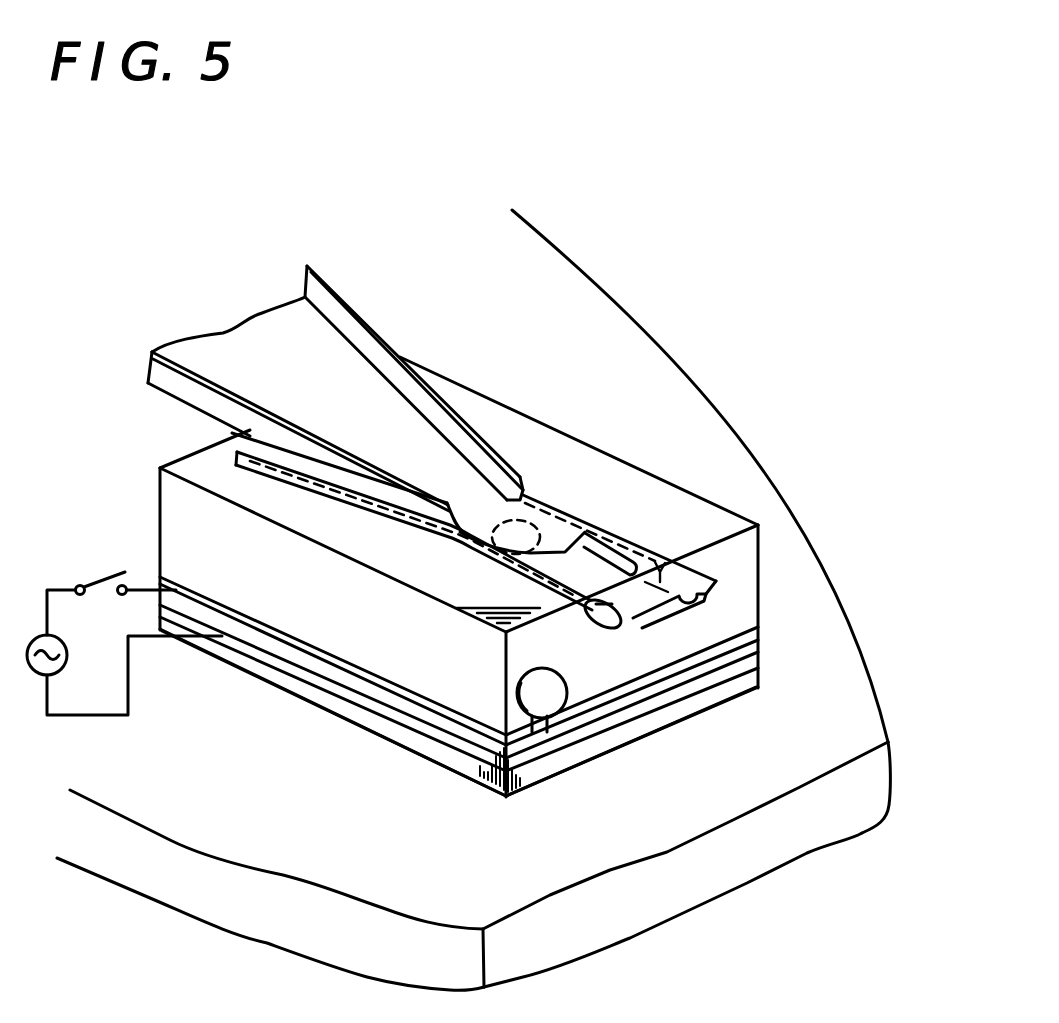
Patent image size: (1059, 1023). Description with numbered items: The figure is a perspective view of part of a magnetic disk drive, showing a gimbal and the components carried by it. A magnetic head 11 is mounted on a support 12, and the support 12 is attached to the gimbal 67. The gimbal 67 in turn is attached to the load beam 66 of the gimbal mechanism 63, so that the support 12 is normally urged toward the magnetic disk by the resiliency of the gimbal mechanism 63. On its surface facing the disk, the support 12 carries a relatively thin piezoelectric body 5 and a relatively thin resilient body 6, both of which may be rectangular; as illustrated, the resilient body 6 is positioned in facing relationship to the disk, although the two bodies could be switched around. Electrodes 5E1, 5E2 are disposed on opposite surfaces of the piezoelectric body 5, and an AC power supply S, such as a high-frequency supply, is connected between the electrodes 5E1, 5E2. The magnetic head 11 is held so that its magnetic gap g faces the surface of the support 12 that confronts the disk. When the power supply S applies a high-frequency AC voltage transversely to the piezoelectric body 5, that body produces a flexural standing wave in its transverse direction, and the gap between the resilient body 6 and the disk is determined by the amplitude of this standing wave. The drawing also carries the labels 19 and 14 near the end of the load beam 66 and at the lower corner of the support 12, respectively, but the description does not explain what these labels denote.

The support 12 is at (752, 588).
The gimbal mechanism 63 is at (310, 370).
The load beam 66 is at (456, 466).
The gimbal 67 is at (705, 588).
The projection 19 is at (620, 625).
The magnetic head 11 is at (548, 698).
The magnetic gap g is at (555, 732).
The hatched corner portion 14 is at (519, 747).
The resilient body 6 is at (418, 747).
The piezoelectric body 5 is at (387, 702).
The electrode 5E1 is at (267, 630).
The electrode 5E2 is at (315, 677).
The AC power supply S is at (61, 669).